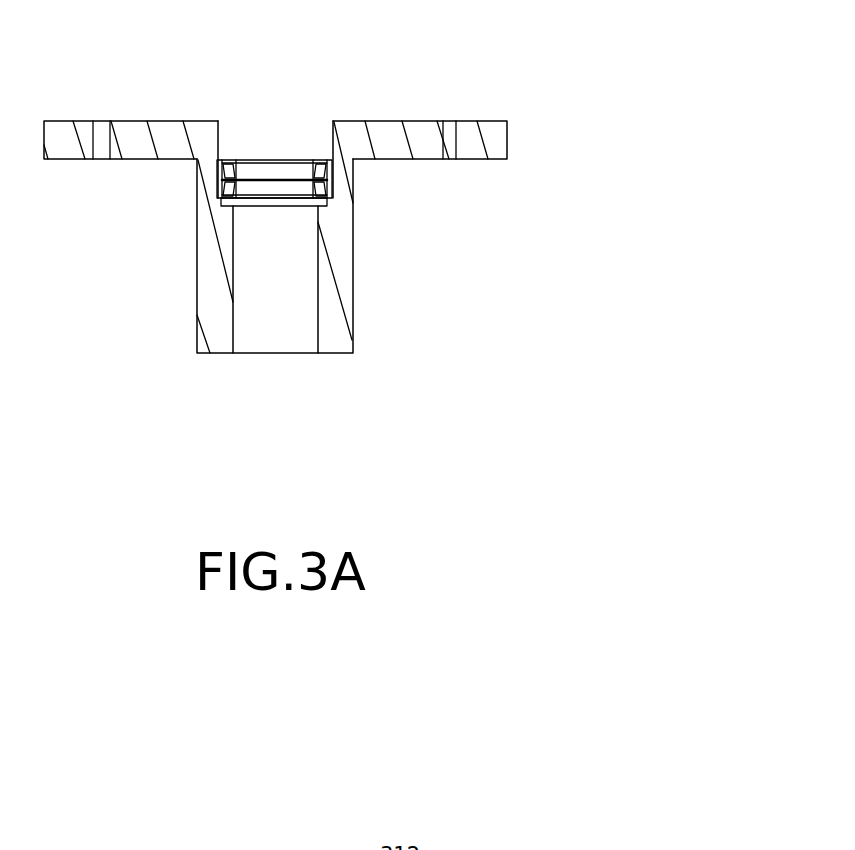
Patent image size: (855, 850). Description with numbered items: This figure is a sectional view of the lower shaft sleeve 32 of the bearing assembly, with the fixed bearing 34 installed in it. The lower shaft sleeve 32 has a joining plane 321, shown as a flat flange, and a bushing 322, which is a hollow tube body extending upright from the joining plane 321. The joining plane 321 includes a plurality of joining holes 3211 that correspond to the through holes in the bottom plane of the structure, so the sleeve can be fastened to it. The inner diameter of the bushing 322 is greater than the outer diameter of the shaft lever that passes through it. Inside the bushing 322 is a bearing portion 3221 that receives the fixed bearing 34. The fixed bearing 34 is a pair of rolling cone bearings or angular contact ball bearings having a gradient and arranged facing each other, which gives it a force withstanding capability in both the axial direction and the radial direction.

The lower shaft sleeve 32 is at (415, 266).
The joining plane 321 is at (492, 128).
The joining holes 3211 is at (449, 128).
The bearing portion 3221 is at (220, 137).
The bushing 322 is at (347, 285).
The fixed bearing 34 is at (332, 190).